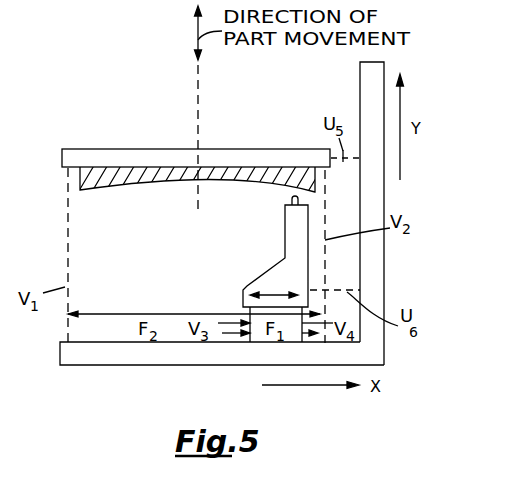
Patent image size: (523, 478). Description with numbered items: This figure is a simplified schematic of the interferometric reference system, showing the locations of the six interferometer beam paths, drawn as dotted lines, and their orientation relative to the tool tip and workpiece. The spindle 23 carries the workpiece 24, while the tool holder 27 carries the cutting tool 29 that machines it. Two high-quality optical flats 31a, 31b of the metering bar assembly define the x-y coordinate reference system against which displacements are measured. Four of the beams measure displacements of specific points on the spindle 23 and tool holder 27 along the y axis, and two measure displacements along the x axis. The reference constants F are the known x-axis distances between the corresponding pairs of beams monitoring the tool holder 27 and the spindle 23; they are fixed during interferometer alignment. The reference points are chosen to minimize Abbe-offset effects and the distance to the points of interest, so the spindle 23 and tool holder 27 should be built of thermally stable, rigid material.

The spindle 23 is at (130, 148).
The workpiece 24 is at (129, 184).
The tool holder 27 is at (266, 269).
The cutting tool 29 is at (291, 198).
The optical flat 31a is at (225, 366).
The optical flat 31b is at (385, 263).